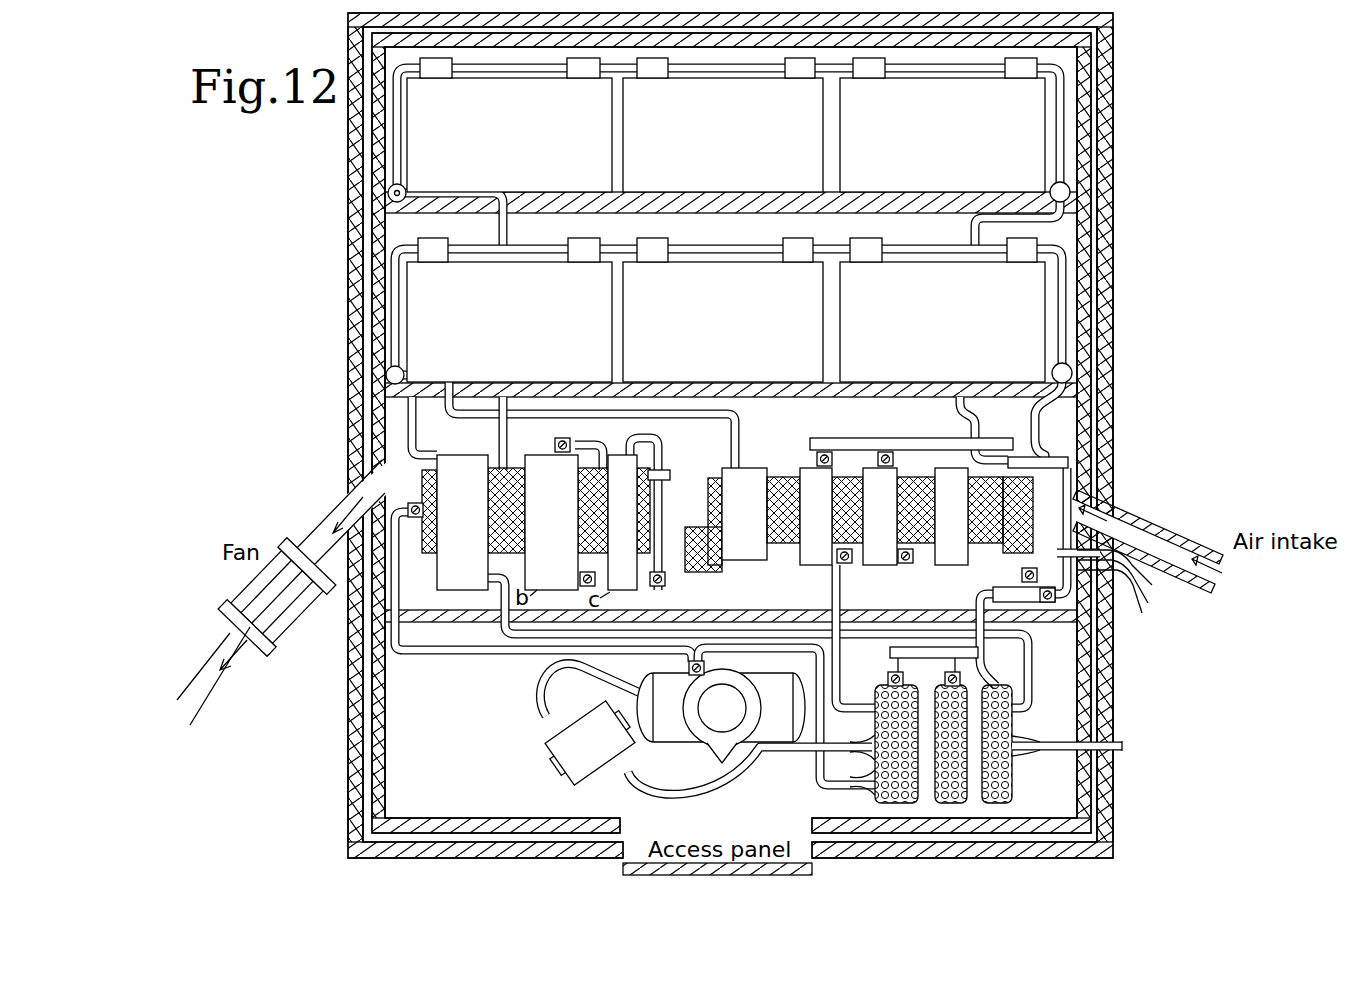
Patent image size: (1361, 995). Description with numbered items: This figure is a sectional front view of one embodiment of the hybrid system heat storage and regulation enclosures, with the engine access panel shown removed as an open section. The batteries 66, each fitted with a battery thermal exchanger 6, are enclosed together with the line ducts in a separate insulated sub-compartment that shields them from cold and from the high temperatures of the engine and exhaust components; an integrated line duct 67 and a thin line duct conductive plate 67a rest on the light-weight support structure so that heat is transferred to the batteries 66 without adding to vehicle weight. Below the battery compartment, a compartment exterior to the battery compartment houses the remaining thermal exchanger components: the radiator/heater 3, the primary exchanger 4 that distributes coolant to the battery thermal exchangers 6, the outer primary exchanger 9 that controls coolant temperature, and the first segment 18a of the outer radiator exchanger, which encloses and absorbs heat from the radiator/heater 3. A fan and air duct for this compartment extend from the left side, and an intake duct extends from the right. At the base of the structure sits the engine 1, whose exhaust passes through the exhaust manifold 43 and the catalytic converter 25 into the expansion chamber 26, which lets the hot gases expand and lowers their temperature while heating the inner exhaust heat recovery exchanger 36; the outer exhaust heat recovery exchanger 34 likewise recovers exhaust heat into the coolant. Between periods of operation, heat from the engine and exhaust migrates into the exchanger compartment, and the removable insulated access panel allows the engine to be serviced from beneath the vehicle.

The engine 1 is at (676, 722).
The radiator/heater 3 is at (420, 490).
The primary exchanger 4 is at (709, 480).
The battery thermal exchanger 6 is at (435, 70).
The outer primary exchanger 9 is at (937, 561).
The first segment of outer radiator exchanger 18a is at (449, 587).
The catalytic converter 25 is at (563, 758).
The expansion chamber 26 is at (1018, 753).
The outer exhaust heat recovery exchanger 34 is at (994, 796).
The inner exhaust heat recovery exchanger 36 is at (980, 745).
The exhaust manifold 43 is at (723, 777).
The battery 66 is at (491, 145).
The integrated line duct 67 is at (389, 191).
The line duct conductive plate 67a is at (922, 192).